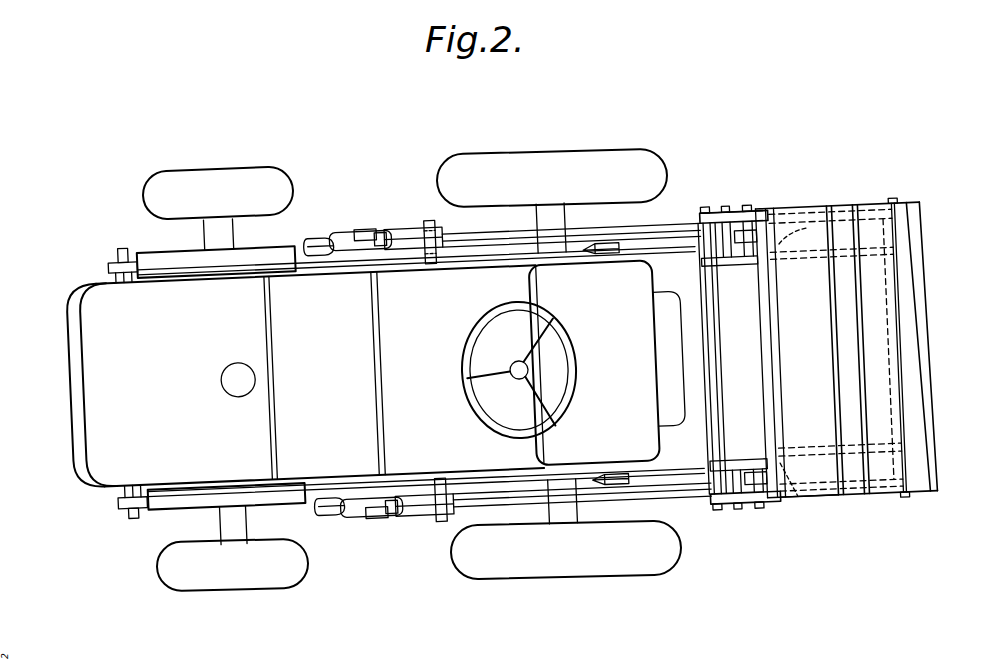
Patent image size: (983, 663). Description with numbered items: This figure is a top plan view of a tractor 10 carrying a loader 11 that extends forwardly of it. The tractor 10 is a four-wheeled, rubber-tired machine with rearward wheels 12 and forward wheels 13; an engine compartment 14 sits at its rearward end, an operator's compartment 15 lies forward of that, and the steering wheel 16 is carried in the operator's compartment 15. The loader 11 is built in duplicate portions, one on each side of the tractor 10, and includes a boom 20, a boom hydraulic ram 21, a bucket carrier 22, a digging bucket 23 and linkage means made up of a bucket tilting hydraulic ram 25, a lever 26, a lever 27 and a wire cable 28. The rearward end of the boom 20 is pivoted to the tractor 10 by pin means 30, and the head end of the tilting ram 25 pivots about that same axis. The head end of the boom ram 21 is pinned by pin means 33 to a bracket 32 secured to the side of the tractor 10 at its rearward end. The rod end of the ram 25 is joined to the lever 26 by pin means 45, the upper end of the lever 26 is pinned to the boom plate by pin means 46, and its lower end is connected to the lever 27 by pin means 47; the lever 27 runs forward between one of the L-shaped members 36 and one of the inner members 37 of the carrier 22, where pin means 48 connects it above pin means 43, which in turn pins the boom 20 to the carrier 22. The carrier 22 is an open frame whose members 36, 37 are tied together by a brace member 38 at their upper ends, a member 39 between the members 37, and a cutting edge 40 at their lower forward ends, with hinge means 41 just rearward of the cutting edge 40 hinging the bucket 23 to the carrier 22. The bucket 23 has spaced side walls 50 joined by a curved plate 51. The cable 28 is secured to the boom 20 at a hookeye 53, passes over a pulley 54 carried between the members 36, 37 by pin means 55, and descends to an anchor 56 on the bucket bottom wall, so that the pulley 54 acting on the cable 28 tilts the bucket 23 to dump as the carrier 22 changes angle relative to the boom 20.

The tractor 10 is at (53, 301).
The loader 11 is at (750, 165).
The rearward wheels 12 is at (188, 165).
The forward wheels 13 is at (533, 160).
The engine compartment 14 is at (132, 380).
The operator's compartment 15 is at (380, 360).
The steering wheel 16 is at (470, 412).
The boom 20 is at (495, 265).
The boom hydraulic ram 21 is at (178, 244).
The bucket carrier 22 is at (782, 397).
The digging bucket 23 is at (837, 530).
The bucket tilting reciprocating hydraulic ram 25 is at (348, 230).
The lever 26 is at (410, 229).
The lever 27 is at (505, 236).
The wire cable 28 is at (650, 243).
The pin means 30 is at (322, 232).
The bracket 32 is at (110, 255).
The pin means 33 is at (125, 239).
The L-shaped members 36 is at (772, 224).
The members 37 is at (705, 273).
The brace member 38 is at (772, 356).
The member 39 is at (705, 375).
The cutting edge 40 is at (931, 393).
The hinge means 41 is at (899, 219).
The pin means 43 is at (729, 220).
The pin means 45 is at (386, 230).
The pin means 46 is at (434, 222).
The pin means 47 is at (372, 229).
The pin means 48 is at (708, 222).
The side walls 50 is at (840, 224).
The curved plate 51 is at (864, 350).
The hookeye 53 is at (605, 263).
The pulley 54 is at (762, 265).
The pin means 55 is at (752, 221).
The anchor 56 is at (800, 255).